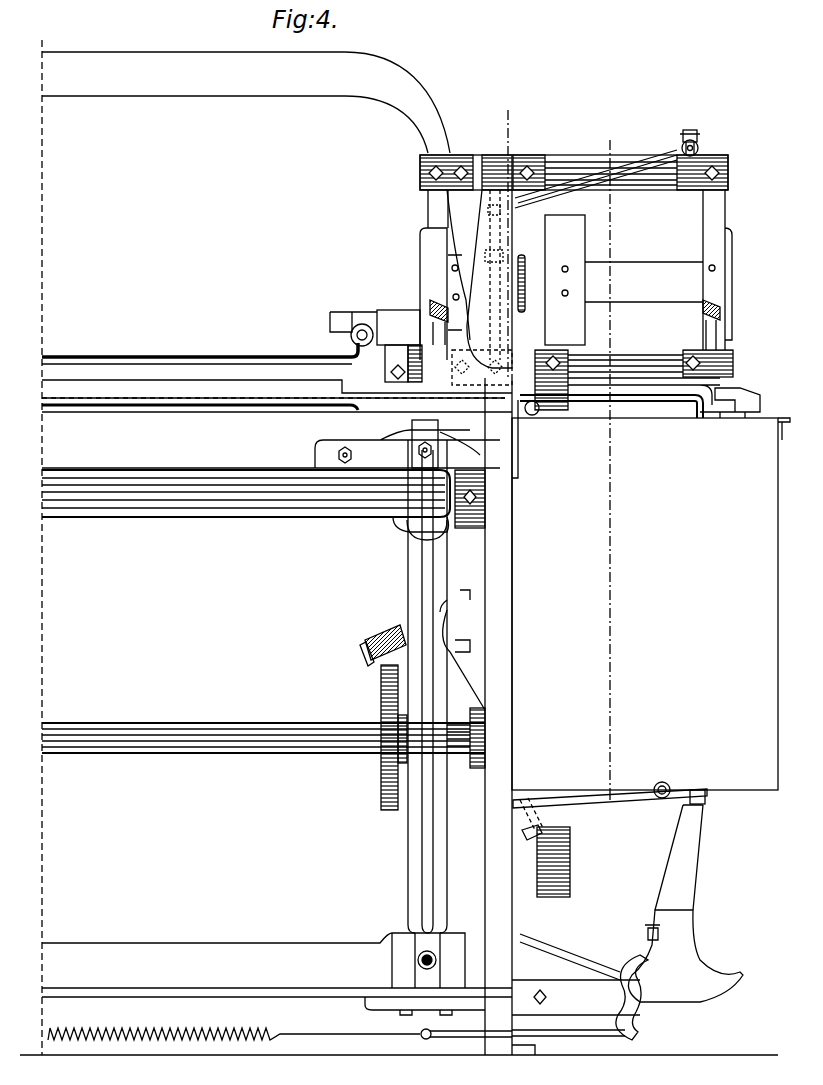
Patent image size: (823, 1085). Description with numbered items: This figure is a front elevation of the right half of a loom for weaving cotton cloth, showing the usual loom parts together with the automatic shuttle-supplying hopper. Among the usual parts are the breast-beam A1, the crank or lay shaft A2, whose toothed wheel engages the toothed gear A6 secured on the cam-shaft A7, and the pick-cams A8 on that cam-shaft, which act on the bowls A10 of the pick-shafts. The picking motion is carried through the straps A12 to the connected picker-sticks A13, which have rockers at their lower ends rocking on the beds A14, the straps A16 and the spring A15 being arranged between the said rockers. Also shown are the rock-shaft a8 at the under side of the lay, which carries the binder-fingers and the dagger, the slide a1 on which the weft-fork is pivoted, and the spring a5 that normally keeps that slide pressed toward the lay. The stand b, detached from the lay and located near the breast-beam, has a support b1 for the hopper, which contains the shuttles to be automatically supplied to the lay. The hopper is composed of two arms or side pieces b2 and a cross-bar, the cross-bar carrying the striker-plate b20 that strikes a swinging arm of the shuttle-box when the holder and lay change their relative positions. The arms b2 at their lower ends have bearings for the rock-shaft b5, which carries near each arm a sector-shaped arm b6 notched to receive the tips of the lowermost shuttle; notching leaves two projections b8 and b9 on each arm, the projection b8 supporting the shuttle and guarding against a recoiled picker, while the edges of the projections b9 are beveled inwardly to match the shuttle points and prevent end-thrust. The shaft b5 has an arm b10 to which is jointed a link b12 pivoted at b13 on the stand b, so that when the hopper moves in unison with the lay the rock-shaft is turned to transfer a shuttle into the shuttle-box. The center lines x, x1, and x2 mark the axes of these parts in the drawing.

The stand b is at (497, 153).
The axis line x2 is at (507, 238).
The support for the hopper b1 is at (575, 152).
The axis line x1 is at (604, 462).
The arms or side pieces of the hopper b2 is at (428, 268).
The striker-plate b20 is at (565, 280).
The projection of transferrer arm b8 is at (644, 282).
The projection of transferrer arm b9 is at (440, 305).
The arms of the rock-shaft b6 is at (410, 345).
The rock-shaft b5 is at (652, 355).
The arm of the shaft b10 is at (644, 369).
The link b12 is at (545, 412).
The pivot b13 is at (570, 405).
The slide a1 is at (748, 397).
The spring a5 is at (380, 365).
The breast-beam A1 is at (275, 393).
The spring A15 is at (277, 735).
The rock-shaft a8 is at (280, 498).
The crank or lay shaft A2 is at (342, 520).
The bowls A10 is at (388, 635).
The pick-cams A8 is at (381, 790).
The cam-shaft A7 is at (293, 755).
The straps A12 is at (626, 807).
The axis x is at (607, 795).
The toothed gear A6 is at (570, 862).
The picker-sticks A13 is at (675, 852).
The beds A14 is at (685, 956).
The straps A16 is at (580, 994).